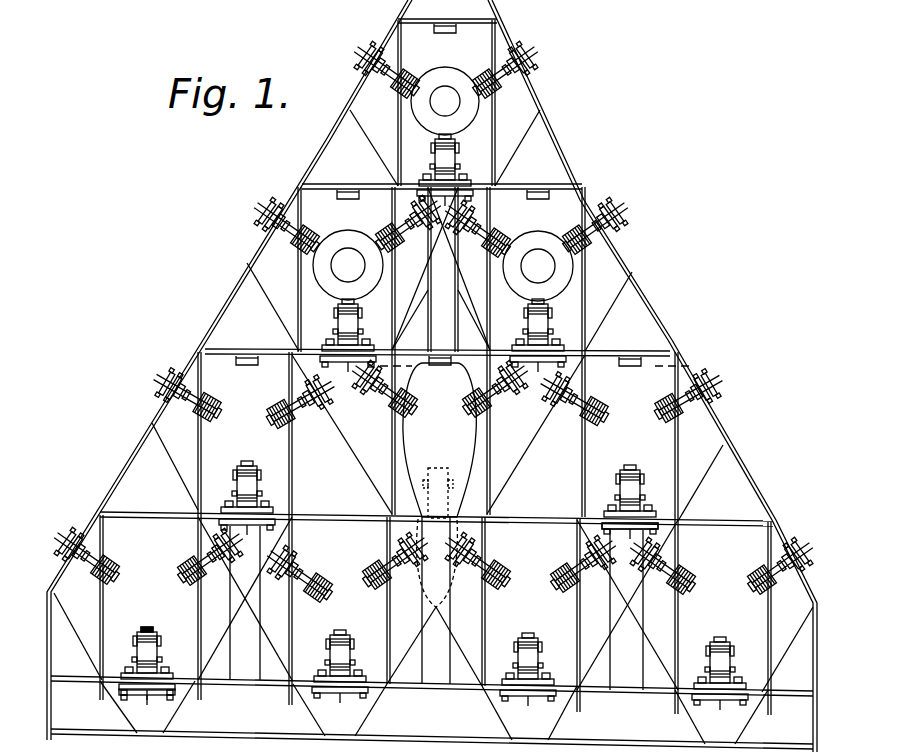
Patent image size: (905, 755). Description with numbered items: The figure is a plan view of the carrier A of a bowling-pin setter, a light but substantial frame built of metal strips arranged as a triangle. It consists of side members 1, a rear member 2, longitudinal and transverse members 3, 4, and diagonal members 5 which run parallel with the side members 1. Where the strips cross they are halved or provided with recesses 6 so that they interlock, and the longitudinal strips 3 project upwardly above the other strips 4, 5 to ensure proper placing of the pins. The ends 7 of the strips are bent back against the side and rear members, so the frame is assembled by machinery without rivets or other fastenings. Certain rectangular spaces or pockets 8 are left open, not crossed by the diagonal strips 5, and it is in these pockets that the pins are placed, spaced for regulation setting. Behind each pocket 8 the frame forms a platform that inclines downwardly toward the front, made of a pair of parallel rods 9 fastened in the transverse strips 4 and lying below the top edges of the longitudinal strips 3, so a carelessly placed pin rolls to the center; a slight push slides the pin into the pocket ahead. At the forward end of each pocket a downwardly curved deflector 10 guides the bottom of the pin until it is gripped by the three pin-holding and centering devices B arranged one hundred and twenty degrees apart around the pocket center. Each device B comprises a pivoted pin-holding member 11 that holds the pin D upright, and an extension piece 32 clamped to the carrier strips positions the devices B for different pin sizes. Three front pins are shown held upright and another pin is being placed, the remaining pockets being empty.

The side members 1 is at (590, 132).
The rear member 2 is at (395, 385).
The longitudinal members 3 is at (300, 622).
The transverse members 4 is at (446, 24).
The diagonal members 5 is at (318, 466).
The recesses 6 is at (443, 111).
The ends of the strips 7 is at (630, 272).
The open spaces or pockets 8 is at (434, 322).
The parallel rods 9 is at (522, 491).
The deflector 10 is at (247, 366).
The pin-holding member 11 is at (156, 634).
The extension piece 32 is at (147, 695).
The carrier A is at (738, 447).
The pin-holding and centering devices B is at (480, 74).
The pin D is at (443, 337).